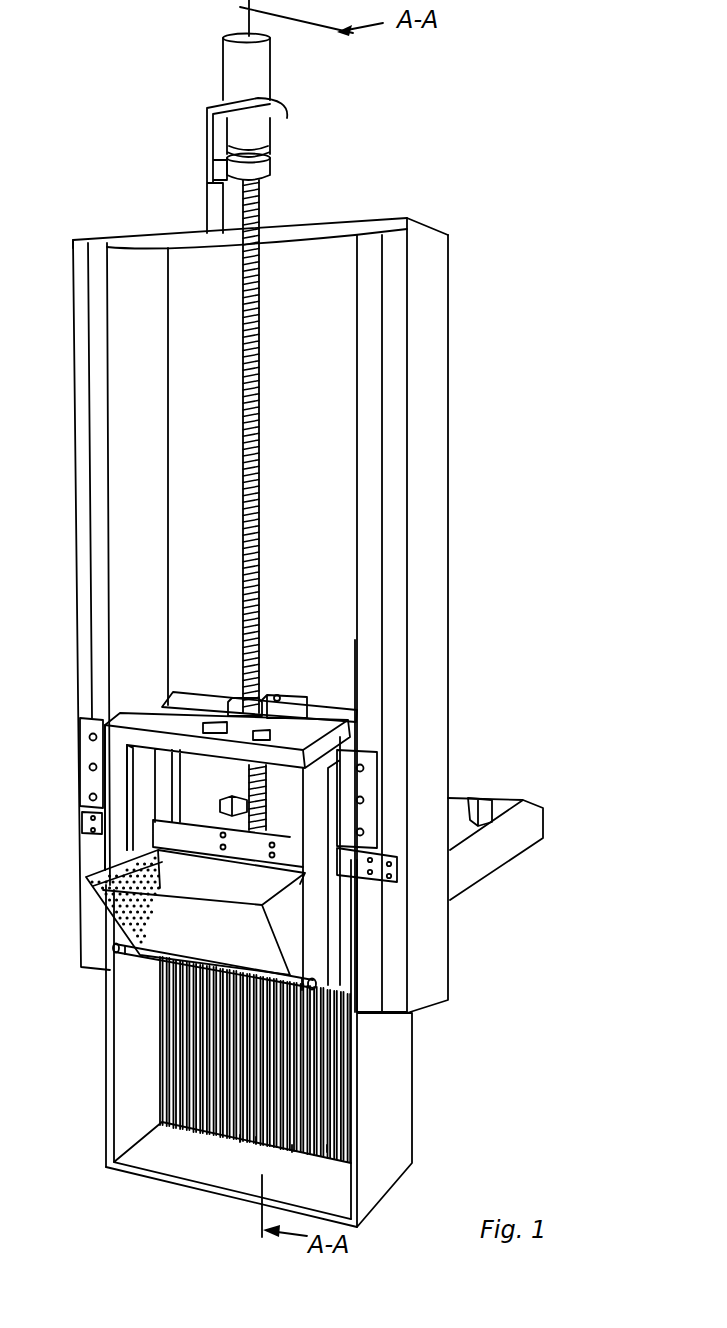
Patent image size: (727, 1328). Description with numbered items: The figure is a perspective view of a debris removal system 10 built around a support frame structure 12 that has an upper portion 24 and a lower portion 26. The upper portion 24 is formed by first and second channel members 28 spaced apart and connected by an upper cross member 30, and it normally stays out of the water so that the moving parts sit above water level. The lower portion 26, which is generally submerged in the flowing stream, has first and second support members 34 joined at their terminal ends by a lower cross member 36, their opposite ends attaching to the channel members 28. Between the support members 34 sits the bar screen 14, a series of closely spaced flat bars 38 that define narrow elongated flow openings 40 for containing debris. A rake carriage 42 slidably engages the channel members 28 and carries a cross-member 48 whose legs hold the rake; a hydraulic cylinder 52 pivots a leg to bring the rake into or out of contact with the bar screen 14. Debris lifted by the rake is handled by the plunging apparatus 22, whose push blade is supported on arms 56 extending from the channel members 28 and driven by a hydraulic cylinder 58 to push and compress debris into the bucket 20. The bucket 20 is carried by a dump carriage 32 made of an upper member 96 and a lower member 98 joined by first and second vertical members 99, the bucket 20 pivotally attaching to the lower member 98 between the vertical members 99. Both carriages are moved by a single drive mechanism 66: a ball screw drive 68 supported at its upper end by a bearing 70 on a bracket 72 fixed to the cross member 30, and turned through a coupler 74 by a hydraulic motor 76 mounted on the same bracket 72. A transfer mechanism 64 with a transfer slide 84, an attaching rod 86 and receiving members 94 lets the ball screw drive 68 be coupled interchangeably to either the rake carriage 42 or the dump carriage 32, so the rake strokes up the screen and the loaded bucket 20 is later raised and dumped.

The debris removal system 10 is at (329, 644).
The support frame structure 12 is at (278, 524).
The bar screen 14 is at (180, 1128).
The bucket 20 is at (96, 907).
The plunging apparatus 22 is at (504, 815).
The upper portion 24 is at (440, 537).
The lower portion 26 is at (265, 1056).
The channel members 28 is at (76, 346).
The upper cross member 30 is at (337, 233).
The dump carriage 32 is at (223, 791).
The support members 34 is at (120, 1060).
The lower cross member 36 is at (200, 1172).
The flat bars 38 is at (327, 1145).
The flow openings 40 is at (256, 1135).
The rake carriage 42 is at (345, 826).
The cross-member 48 is at (192, 703).
The hydraulic cylinder 52 is at (218, 815).
The arms 56 is at (520, 840).
The hydraulic cylinder 58 is at (468, 798).
The transfer mechanism 64 is at (272, 697).
The drive mechanism 66 is at (266, 134).
The ball screw drive 68 is at (258, 357).
The bearing 70 is at (268, 172).
The bracket 72 is at (207, 113).
The coupler 74 is at (265, 133).
The hydraulic motor 76 is at (258, 66).
The transfer slide 84 is at (238, 704).
The attaching rod 86 is at (358, 762).
The receiving members 94 is at (228, 738).
The upper member 96 is at (157, 744).
The lower member 98 is at (137, 962).
The vertical members 99 is at (318, 886).